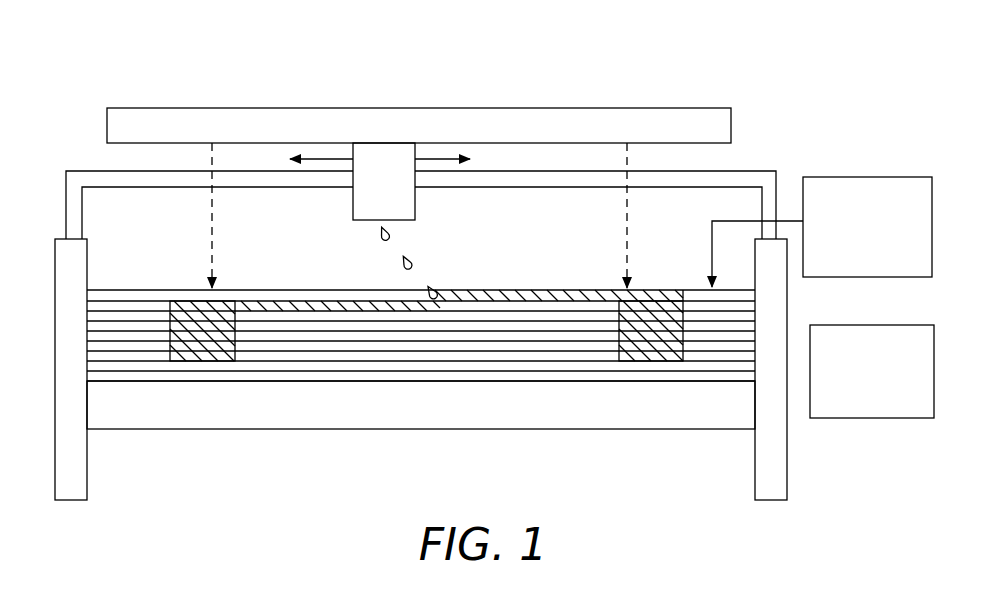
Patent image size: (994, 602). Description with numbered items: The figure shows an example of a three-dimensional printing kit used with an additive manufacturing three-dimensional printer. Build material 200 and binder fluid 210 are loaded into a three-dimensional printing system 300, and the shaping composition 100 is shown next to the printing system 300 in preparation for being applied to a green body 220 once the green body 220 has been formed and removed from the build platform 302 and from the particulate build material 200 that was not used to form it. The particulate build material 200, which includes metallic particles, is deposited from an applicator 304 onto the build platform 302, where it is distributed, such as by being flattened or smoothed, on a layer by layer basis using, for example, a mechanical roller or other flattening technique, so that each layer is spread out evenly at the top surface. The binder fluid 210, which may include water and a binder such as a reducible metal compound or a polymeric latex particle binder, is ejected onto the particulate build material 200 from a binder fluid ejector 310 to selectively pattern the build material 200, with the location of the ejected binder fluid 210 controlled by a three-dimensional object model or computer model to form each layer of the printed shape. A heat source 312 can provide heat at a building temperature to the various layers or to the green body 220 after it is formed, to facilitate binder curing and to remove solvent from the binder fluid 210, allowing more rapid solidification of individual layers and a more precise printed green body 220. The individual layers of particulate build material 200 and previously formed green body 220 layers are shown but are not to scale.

The 3D printing system 300 is at (178, 57).
The heat source 312 is at (419, 125).
The binder fluid ejector 310 is at (380, 181).
The binder fluid 210 is at (411, 258).
The green body 220 is at (512, 290).
The build material 200 is at (337, 367).
The build platform 302 is at (421, 405).
The applicator 304 is at (822, 232).
The shaping composition 100 is at (872, 371).